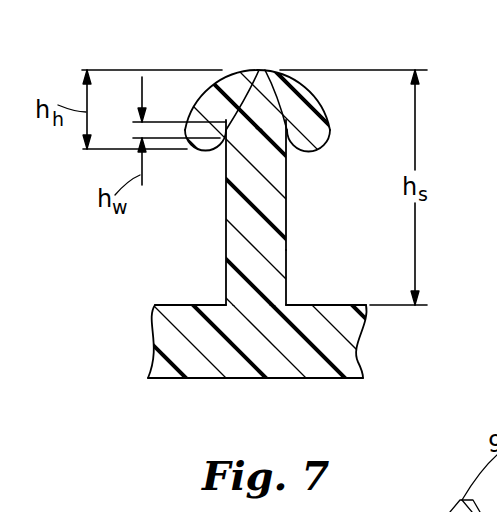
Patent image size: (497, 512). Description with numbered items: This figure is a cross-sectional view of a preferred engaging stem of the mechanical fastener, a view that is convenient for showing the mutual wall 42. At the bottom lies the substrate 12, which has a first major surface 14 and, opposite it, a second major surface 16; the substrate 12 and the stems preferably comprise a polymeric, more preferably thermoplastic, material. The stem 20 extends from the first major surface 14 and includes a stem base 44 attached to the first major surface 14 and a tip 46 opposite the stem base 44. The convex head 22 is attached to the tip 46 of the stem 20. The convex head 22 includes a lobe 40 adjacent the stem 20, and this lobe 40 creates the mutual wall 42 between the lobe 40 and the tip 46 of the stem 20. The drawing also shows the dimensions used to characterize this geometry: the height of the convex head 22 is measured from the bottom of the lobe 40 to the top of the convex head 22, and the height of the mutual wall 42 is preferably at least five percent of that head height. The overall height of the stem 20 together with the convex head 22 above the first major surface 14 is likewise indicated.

The substrate 12 is at (355, 333).
The first major surface 14 is at (170, 305).
The second major surface 16 is at (203, 378).
The stem 20 is at (235, 247).
The convex head 22 is at (300, 102).
The lobe 40 is at (207, 152).
The mutual wall 42 is at (265, 70).
The stem base 44 is at (273, 293).
The tip 46 is at (287, 120).